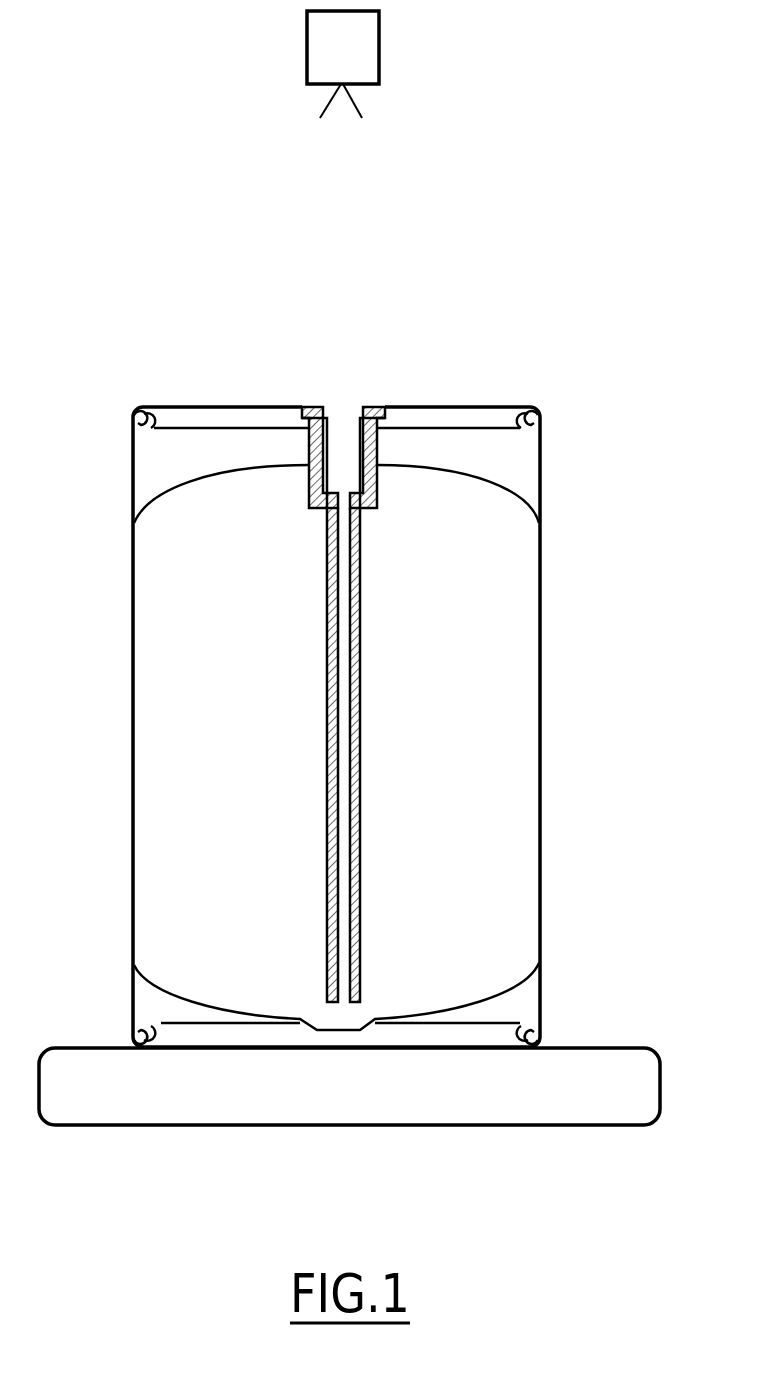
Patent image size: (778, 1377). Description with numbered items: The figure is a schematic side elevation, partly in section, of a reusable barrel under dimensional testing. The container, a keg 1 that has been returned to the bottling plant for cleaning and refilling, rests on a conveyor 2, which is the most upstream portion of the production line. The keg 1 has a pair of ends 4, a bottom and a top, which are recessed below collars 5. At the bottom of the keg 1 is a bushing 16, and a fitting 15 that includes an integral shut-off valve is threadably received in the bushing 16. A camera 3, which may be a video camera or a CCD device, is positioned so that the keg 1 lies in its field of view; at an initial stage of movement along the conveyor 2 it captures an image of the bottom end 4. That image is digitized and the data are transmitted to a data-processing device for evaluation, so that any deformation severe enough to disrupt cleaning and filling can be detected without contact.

The keg 1 is at (568, 616).
The conveyor 2 is at (337, 1127).
The camera 3 is at (366, 48).
The ends 4 is at (487, 478).
The collars 5 is at (147, 412).
The fitting 15 is at (372, 405).
The bushing 16 is at (307, 452).